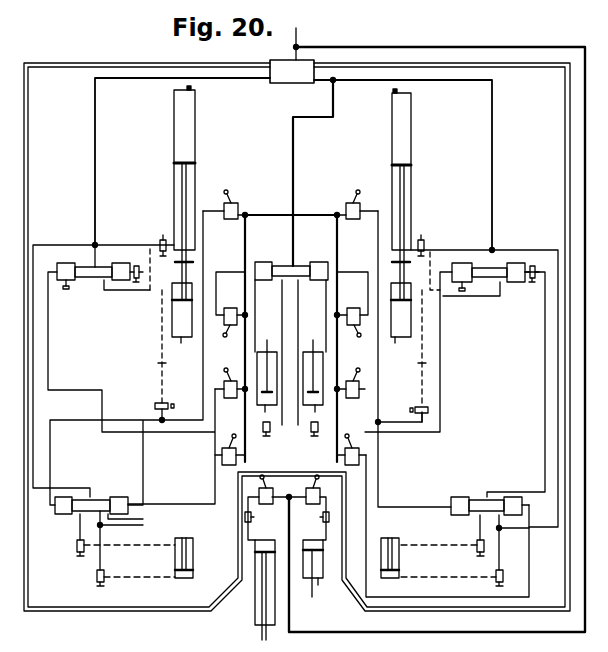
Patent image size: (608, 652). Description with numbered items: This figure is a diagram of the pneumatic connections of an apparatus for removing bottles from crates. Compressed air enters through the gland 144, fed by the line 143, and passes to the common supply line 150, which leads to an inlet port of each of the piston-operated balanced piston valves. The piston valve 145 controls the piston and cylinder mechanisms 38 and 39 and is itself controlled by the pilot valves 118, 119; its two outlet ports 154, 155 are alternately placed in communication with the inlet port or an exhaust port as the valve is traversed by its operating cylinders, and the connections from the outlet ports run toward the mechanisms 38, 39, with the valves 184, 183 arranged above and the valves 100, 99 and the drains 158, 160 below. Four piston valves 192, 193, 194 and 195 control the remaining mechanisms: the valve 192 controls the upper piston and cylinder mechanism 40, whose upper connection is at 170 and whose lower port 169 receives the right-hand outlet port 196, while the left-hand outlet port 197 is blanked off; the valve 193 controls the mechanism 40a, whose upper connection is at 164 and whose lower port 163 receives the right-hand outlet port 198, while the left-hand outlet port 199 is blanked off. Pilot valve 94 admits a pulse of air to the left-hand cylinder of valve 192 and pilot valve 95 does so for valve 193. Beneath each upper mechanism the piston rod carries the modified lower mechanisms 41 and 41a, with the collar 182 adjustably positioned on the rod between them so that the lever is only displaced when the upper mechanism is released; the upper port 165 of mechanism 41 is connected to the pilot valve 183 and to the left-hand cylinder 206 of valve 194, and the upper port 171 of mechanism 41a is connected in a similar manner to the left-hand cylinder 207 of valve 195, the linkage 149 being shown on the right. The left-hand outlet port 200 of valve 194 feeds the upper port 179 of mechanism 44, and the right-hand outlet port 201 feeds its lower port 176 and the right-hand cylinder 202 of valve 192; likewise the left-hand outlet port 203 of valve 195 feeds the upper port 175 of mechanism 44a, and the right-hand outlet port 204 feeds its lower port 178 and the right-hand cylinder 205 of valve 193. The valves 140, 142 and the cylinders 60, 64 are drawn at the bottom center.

The supply line 143 is at (299, 28).
The gland 144 is at (283, 84).
The common supply line 150 is at (294, 132).
The piston and cylinder mechanism 40a is at (195, 128).
The piston and cylinder mechanism 40 is at (411, 130).
The cylinder port 164 is at (191, 89).
The cylinder port 170 is at (393, 91).
The collar 182 is at (193, 263).
The piston and cylinder mechanism 41a is at (172, 325).
The piston and cylinder mechanism 41 is at (411, 330).
The upper port 171 is at (172, 290).
The control linkage 149 is at (428, 414).
The lower port 163 is at (172, 243).
The lower port 169 is at (419, 250).
The control valve 184 is at (235, 203).
The pilot valve 183 is at (348, 203).
The piston valve 145 is at (287, 262).
The outlet port 154 is at (266, 280).
The outlet port 155 is at (307, 280).
The pilot valve 119 is at (234, 304).
The pilot valve 118 is at (358, 304).
The pilot valve 95 is at (228, 378).
The pilot valve 94 is at (352, 378).
The piston and cylinder mechanism 38 is at (255, 362).
The piston and cylinder mechanism 39 is at (328, 362).
The cylinder drain 158 is at (267, 406).
The cylinder drain 160 is at (312, 406).
The control valve 100 is at (222, 452).
The control valve 99 is at (360, 456).
The piston valve 193 is at (99, 263).
The right-hand cylinder 205 is at (128, 259).
The left-hand outlet port 199 is at (78, 286).
The right-hand outlet port 198 is at (109, 280).
The piston valve 192 is at (487, 262).
The right-hand cylinder 202 is at (516, 263).
The left-hand outlet port 197 is at (477, 283).
The right-hand outlet port 196 is at (510, 283).
The upper port 165 is at (411, 291).
The left-hand cylinder 207 is at (63, 497).
The piston valve 195 is at (100, 500).
The left-hand outlet port 203 is at (78, 514).
The right-hand outlet port 204 is at (140, 518).
The upper port 175 is at (176, 545).
The lower port 178 is at (177, 574).
The piston and cylinder mechanism 44a is at (193, 567).
The left-hand cylinder 206 is at (459, 498).
The piston valve 194 is at (484, 498).
The left-hand outlet port 200 is at (479, 514).
The right-hand outlet port 201 is at (501, 513).
The piston and cylinder mechanism 44 is at (399, 563).
The upper port 179 is at (399, 545).
The lower port 176 is at (385, 575).
The control valve 140 is at (260, 493).
The control valve 142 is at (320, 495).
The hydraulic cylinder 60 is at (256, 597).
The hydraulic cylinder 64 is at (303, 567).